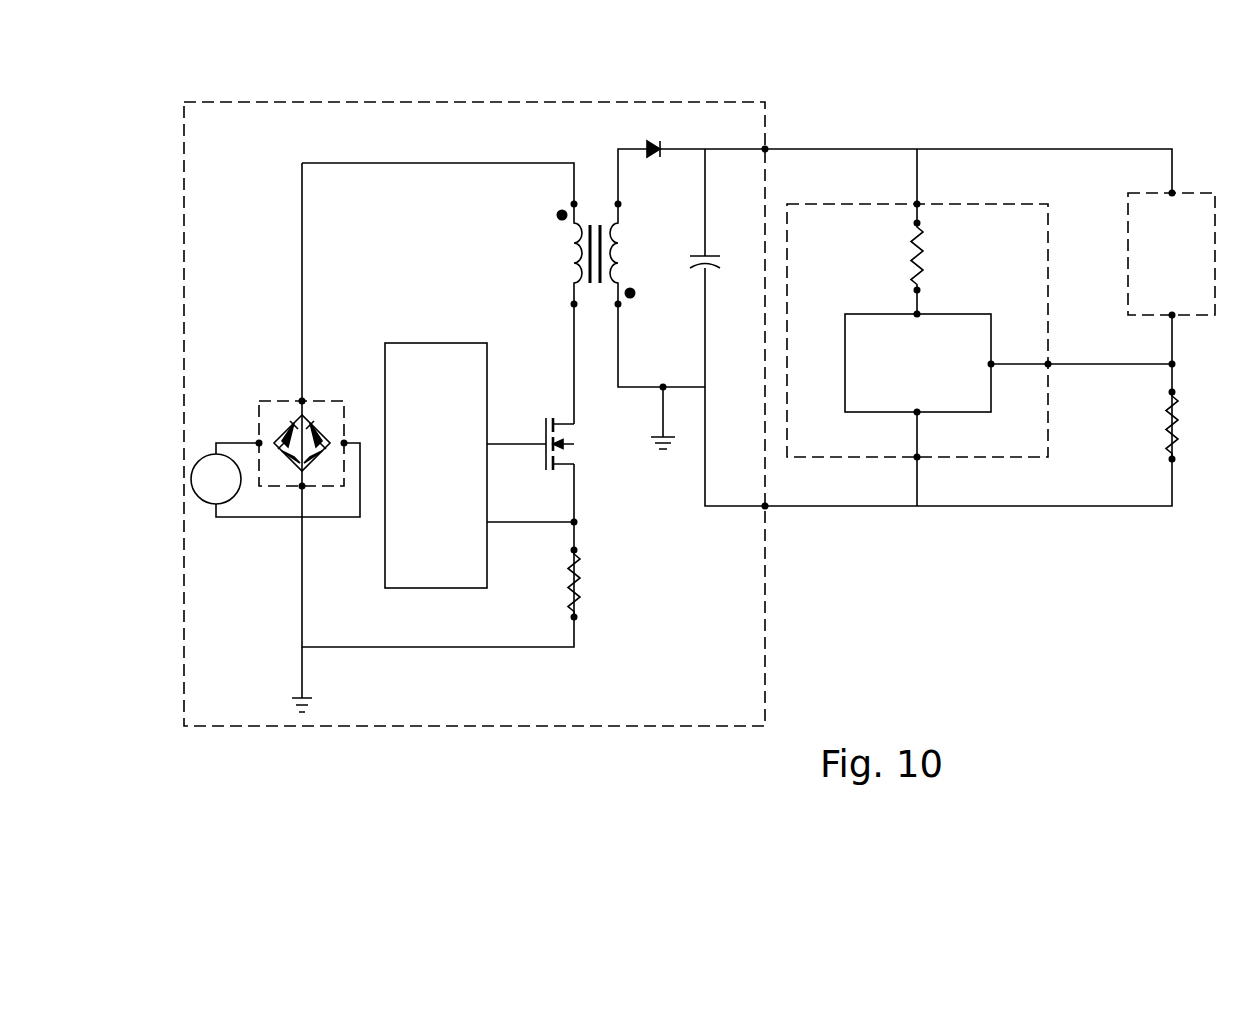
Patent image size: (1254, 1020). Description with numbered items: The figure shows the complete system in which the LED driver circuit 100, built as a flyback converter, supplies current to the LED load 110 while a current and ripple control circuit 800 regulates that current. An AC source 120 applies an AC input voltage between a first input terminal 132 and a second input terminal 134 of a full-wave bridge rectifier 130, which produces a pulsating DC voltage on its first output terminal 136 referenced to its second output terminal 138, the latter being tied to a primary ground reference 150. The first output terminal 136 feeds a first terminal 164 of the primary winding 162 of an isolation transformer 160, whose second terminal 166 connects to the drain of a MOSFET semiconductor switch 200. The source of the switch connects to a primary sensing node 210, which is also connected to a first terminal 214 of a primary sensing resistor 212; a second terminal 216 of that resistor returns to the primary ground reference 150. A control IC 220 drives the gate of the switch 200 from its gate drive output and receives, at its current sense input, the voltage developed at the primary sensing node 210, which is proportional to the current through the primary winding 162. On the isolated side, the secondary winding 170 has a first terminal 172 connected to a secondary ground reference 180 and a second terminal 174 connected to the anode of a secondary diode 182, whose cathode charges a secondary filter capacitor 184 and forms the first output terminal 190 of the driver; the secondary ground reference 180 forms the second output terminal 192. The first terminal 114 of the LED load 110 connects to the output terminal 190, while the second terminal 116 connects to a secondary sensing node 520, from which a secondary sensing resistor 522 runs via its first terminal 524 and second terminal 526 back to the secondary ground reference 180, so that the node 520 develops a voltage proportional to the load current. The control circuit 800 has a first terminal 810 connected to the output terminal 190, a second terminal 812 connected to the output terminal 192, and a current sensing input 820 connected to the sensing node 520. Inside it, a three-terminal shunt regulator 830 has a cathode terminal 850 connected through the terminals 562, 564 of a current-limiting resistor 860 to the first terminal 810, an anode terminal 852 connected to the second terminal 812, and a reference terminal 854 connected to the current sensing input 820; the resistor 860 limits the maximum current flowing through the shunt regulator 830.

The LED driver circuit 100 is at (245, 135).
The LED load 110 is at (1172, 193).
The first (+) LED load terminal 114 is at (1172, 193).
The second (−) LED load terminal 116 is at (1172, 315).
The AC source 120 is at (203, 500).
The full-wave bridge rectifier 130 is at (290, 401).
The first input terminal 132 is at (259, 443).
The second input terminal 134 is at (344, 443).
The first (+) output terminal 136 is at (302, 401).
The second (−) output terminal 138 is at (302, 486).
The primary ground reference 150 is at (307, 698).
The isolation transformer 160 is at (601, 229).
The primary winding 162 is at (574, 252).
The first terminal of the primary winding 164 is at (574, 204).
The second terminal of the primary winding 166 is at (574, 304).
The secondary winding 170 is at (618, 268).
The first terminal of the secondary winding 172 is at (618, 204).
The second terminal of the secondary winding 174 is at (618, 304).
The secondary ground reference 180 is at (660, 437).
The secondary diode 182 is at (653, 157).
The secondary filter capacitor 184 is at (690, 262).
The first (+) output terminal 190 is at (765, 149).
The second (−) output terminal 192 is at (765, 506).
The semiconductor switch 200 is at (546, 428).
The primary sensing node 210 is at (574, 522).
The primary sensing resistor 212 is at (578, 595).
The first terminal of the primary sensing resistor 214 is at (574, 550).
The second terminal of the primary sensing resistor 216 is at (574, 617).
The LED lighting controller integrated circuit 220 is at (460, 582).
The secondary sensing node 520 is at (1172, 364).
The secondary sensing resistor 522 is at (1172, 425).
The first terminal of the secondary sensing resistor 524 is at (1172, 392).
The second terminal of the secondary sensing resistor 526 is at (1172, 459).
The resistor second terminal 562 is at (917, 290).
The resistor first terminal 564 is at (917, 223).
The current and ripple control circuit 800 is at (839, 232).
The first (+) terminal 810 is at (917, 204).
The second (−) terminal 812 is at (917, 457).
The current sensing (CS) input 820 is at (1048, 364).
The three-terminal shunt regulator 830 is at (845, 364).
The cathode (K) terminal 850 is at (917, 314).
The anode (A) terminal 852 is at (917, 412).
The reference (R) terminal 854 is at (991, 364).
The current-limiting resistor 860 is at (913, 258).